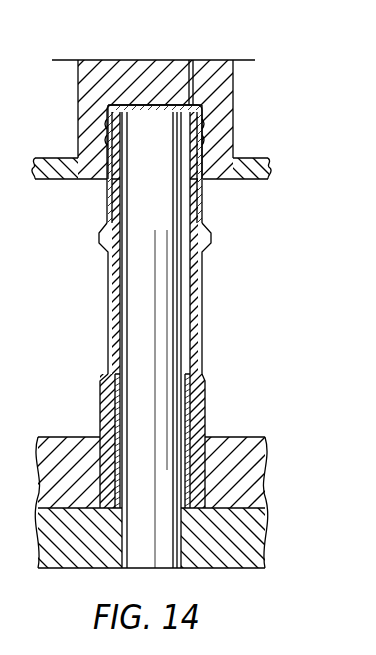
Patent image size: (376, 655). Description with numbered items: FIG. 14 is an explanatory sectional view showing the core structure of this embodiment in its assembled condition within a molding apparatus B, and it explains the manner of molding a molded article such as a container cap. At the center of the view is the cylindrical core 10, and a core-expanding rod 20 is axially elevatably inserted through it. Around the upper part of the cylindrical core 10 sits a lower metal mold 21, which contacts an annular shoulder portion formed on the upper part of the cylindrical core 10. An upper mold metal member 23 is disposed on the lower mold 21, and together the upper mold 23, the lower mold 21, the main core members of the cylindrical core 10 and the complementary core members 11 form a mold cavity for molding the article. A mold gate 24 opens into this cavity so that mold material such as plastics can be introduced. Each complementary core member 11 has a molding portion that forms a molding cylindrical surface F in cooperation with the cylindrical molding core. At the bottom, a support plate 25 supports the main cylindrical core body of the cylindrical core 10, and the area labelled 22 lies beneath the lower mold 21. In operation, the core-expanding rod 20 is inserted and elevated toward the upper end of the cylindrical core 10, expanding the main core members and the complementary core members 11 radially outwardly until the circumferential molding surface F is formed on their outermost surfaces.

The cylindrical core 10 is at (218, 421).
The complementary core member 11 is at (112, 126).
The core-expanding rod 20 is at (158, 333).
The lower metal mold 21 is at (258, 158).
The gap under plate 22 is at (110, 179).
The upper mold metal member 23 is at (231, 102).
The mold gate 24 is at (202, 62).
The support plate 25 is at (232, 437).
The molding apparatus B is at (210, 259).
The molding cylindrical surface F is at (203, 116).